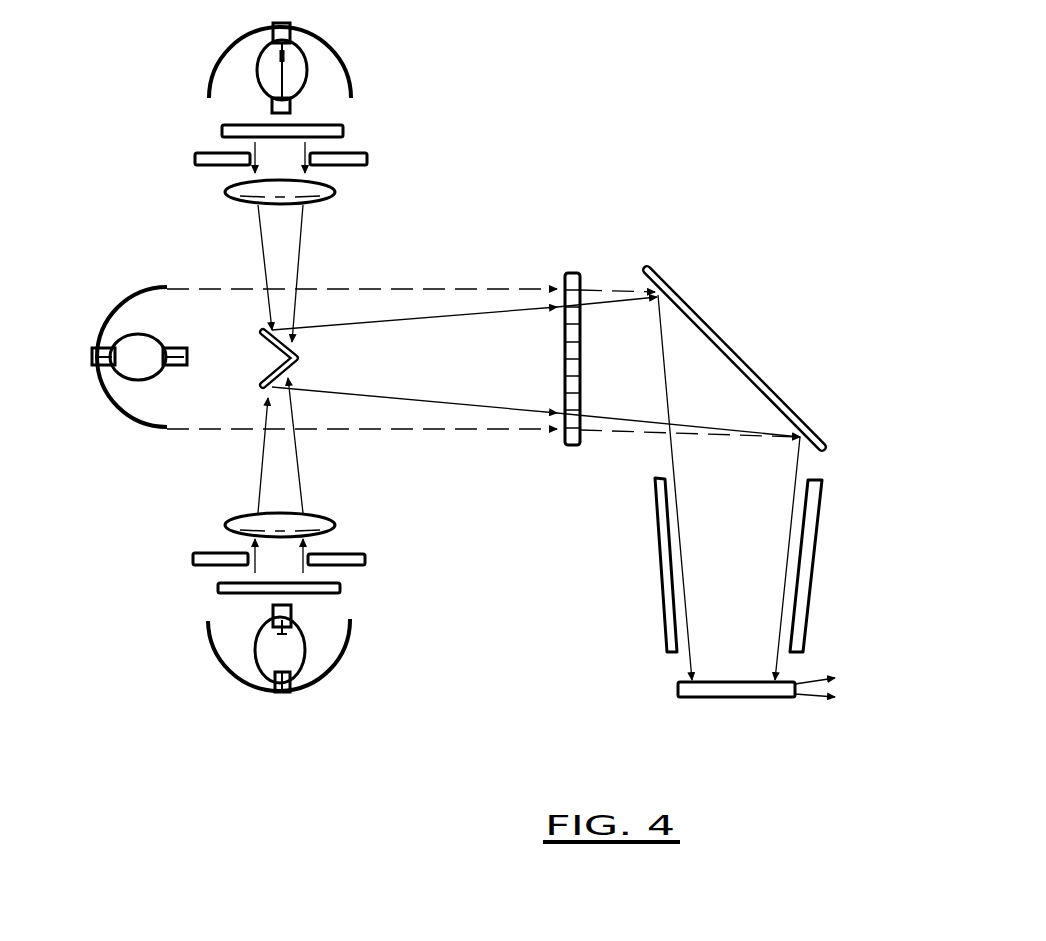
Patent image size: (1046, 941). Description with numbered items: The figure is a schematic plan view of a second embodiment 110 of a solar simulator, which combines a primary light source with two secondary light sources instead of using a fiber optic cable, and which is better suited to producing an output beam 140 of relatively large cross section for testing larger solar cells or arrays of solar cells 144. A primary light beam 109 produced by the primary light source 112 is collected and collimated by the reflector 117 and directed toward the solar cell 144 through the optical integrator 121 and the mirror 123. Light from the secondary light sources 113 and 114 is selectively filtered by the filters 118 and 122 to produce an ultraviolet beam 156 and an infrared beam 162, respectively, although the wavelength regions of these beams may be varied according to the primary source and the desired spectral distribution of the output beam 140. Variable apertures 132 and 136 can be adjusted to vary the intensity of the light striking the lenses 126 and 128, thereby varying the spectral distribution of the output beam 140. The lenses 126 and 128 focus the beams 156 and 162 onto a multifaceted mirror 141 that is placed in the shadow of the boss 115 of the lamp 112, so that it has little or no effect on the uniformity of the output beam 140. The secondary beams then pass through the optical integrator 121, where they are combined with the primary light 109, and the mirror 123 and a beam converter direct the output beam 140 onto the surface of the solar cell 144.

The second embodiment of solar simulator 110 is at (664, 93).
The secondary light source 114 is at (310, 80).
The filter 122 is at (344, 131).
The variable aperture 136 is at (196, 158).
The infrared beam 162 is at (312, 166).
The lens 128 is at (231, 198).
The primary light beam 109 is at (215, 288).
The reflector 117 is at (115, 313).
The primary light source 112 is at (122, 388).
The boss of lamp 115 is at (174, 347).
The multifaceted mirror 141 is at (264, 354).
The optical integrator 121 is at (572, 272).
The mirror 123 is at (772, 382).
The output beam 140 is at (675, 472).
The solar cell 144 is at (678, 688).
The lens 126 is at (235, 517).
The variable aperture 132 is at (366, 561).
The ultraviolet beam 156 is at (312, 550).
The filter 118 is at (341, 589).
The secondary light source 113 is at (314, 652).